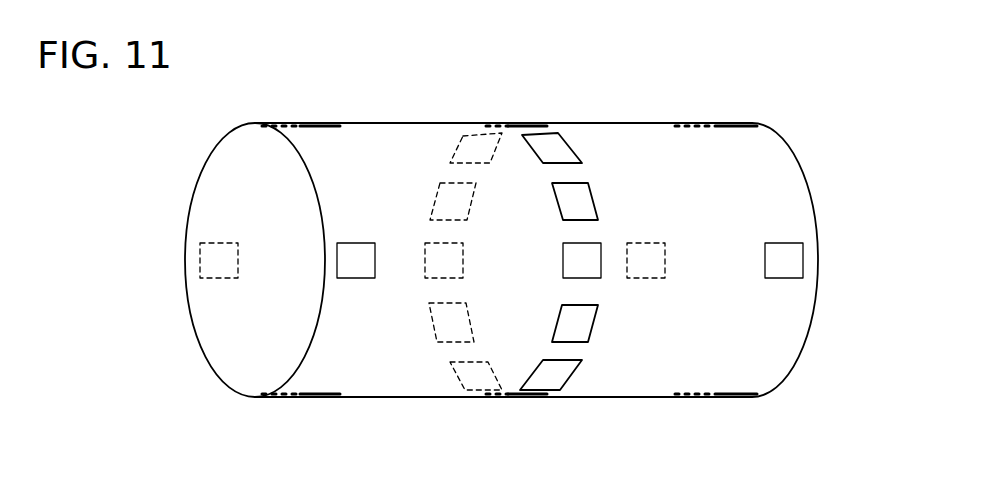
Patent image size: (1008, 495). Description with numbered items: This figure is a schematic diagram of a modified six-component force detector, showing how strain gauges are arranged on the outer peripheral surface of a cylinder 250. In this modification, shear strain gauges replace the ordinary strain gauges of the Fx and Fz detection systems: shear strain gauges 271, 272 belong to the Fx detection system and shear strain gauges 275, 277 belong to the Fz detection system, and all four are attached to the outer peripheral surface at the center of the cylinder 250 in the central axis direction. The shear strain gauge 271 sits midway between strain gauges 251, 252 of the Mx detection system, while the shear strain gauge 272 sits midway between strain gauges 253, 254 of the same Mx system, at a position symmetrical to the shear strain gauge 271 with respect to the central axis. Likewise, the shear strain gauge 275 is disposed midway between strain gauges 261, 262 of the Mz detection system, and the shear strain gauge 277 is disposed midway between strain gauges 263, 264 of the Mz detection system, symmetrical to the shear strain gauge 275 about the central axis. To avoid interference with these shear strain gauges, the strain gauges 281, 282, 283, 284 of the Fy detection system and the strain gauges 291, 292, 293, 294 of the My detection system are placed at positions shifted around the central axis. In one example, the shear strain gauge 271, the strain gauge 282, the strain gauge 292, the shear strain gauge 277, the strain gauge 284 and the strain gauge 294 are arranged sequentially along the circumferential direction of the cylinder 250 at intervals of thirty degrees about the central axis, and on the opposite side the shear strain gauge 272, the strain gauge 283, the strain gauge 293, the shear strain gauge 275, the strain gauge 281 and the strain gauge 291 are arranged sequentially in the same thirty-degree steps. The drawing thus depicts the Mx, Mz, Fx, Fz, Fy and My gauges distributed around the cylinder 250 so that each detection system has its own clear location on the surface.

The cylinder 250 is at (783, 143).
The strain gauge 251 is at (340, 270).
The strain gauge 252 is at (797, 257).
The strain gauge 253 is at (665, 245).
The strain gauge 254 is at (205, 265).
The strain gauge 261 is at (317, 123).
The strain gauge 262 is at (733, 123).
The strain gauge 263 is at (727, 398).
The strain gauge 264 is at (314, 398).
The shear strain gauge 271 is at (600, 243).
The shear strain gauge 272 is at (433, 273).
The shear strain gauge 275 is at (522, 123).
The shear strain gauge 277 is at (522, 397).
The strain gauge 281 is at (568, 135).
The strain gauge 282 is at (587, 323).
The strain gauge 283 is at (435, 198).
The strain gauge 284 is at (462, 380).
The strain gauge 291 is at (597, 183).
The strain gauge 292 is at (575, 376).
The strain gauge 293 is at (458, 143).
The strain gauge 294 is at (437, 333).